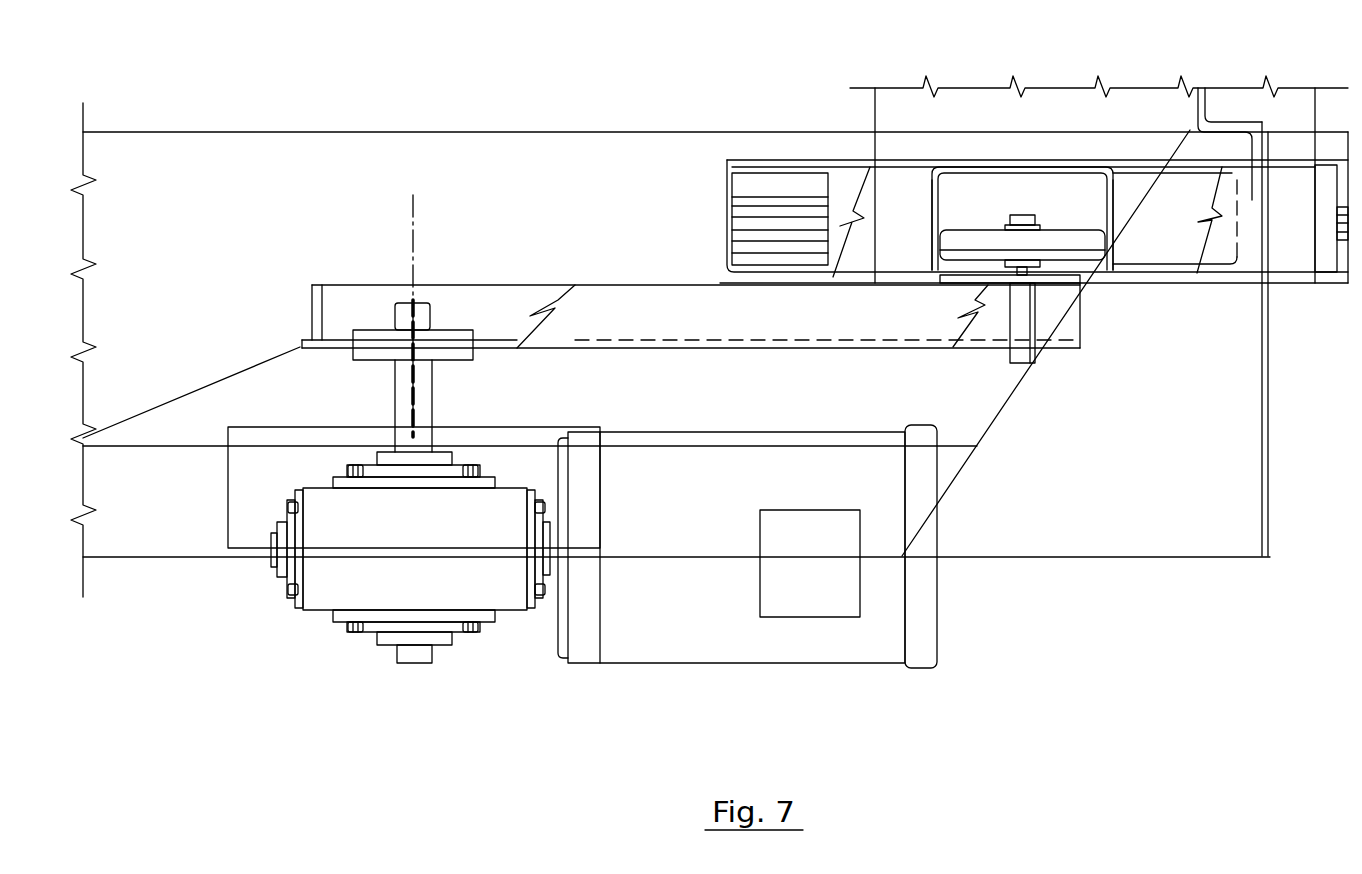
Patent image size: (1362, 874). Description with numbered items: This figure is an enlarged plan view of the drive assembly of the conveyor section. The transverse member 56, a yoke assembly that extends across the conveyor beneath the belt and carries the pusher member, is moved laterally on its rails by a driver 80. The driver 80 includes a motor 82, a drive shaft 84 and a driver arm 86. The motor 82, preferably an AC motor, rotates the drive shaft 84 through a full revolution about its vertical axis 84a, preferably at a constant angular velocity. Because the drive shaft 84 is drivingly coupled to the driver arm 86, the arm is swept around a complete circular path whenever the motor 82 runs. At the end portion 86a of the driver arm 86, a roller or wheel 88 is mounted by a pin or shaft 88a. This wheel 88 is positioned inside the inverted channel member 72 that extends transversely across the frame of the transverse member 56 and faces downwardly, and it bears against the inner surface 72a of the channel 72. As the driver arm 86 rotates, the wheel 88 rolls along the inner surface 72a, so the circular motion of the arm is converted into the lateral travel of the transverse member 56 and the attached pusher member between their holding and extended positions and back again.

The transverse member 56 is at (845, 190).
The channel member 72 is at (930, 227).
The inner surface 72a is at (1113, 225).
The driver 80 is at (732, 568).
The motor 82 is at (750, 665).
The drive shaft 84 is at (383, 400).
The vertical axis 84a is at (413, 225).
The driver arm 86 is at (768, 345).
The end portion 86a is at (1058, 348).
The wheel 88 is at (1085, 255).
The pin 88a is at (1037, 310).